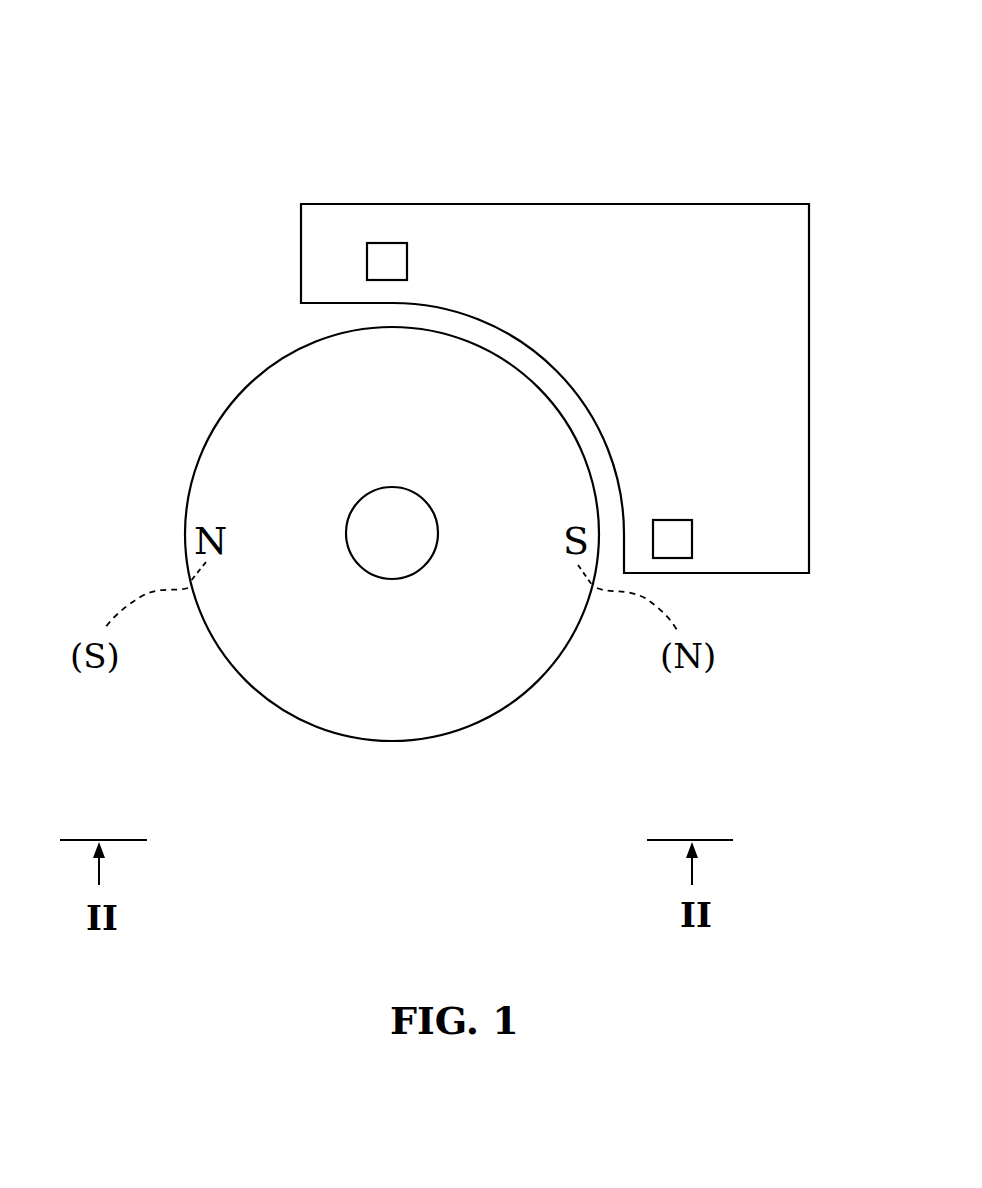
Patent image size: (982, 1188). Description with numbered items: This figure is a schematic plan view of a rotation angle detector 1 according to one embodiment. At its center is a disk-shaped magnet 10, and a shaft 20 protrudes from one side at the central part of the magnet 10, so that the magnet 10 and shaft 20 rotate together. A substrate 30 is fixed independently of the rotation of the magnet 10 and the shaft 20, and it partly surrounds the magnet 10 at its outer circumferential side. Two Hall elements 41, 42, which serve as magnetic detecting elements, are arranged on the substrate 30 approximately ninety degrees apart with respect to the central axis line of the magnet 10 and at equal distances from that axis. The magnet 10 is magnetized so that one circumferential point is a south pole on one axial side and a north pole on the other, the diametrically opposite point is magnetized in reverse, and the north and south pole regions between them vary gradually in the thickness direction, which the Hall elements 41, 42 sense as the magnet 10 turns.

The rotation angle detector 1 is at (533, 125).
The magnet 10 is at (368, 742).
The shaft 20 is at (355, 500).
The substrate 30 is at (566, 204).
The Hall element 41 is at (694, 540).
The Hall element 42 is at (381, 243).